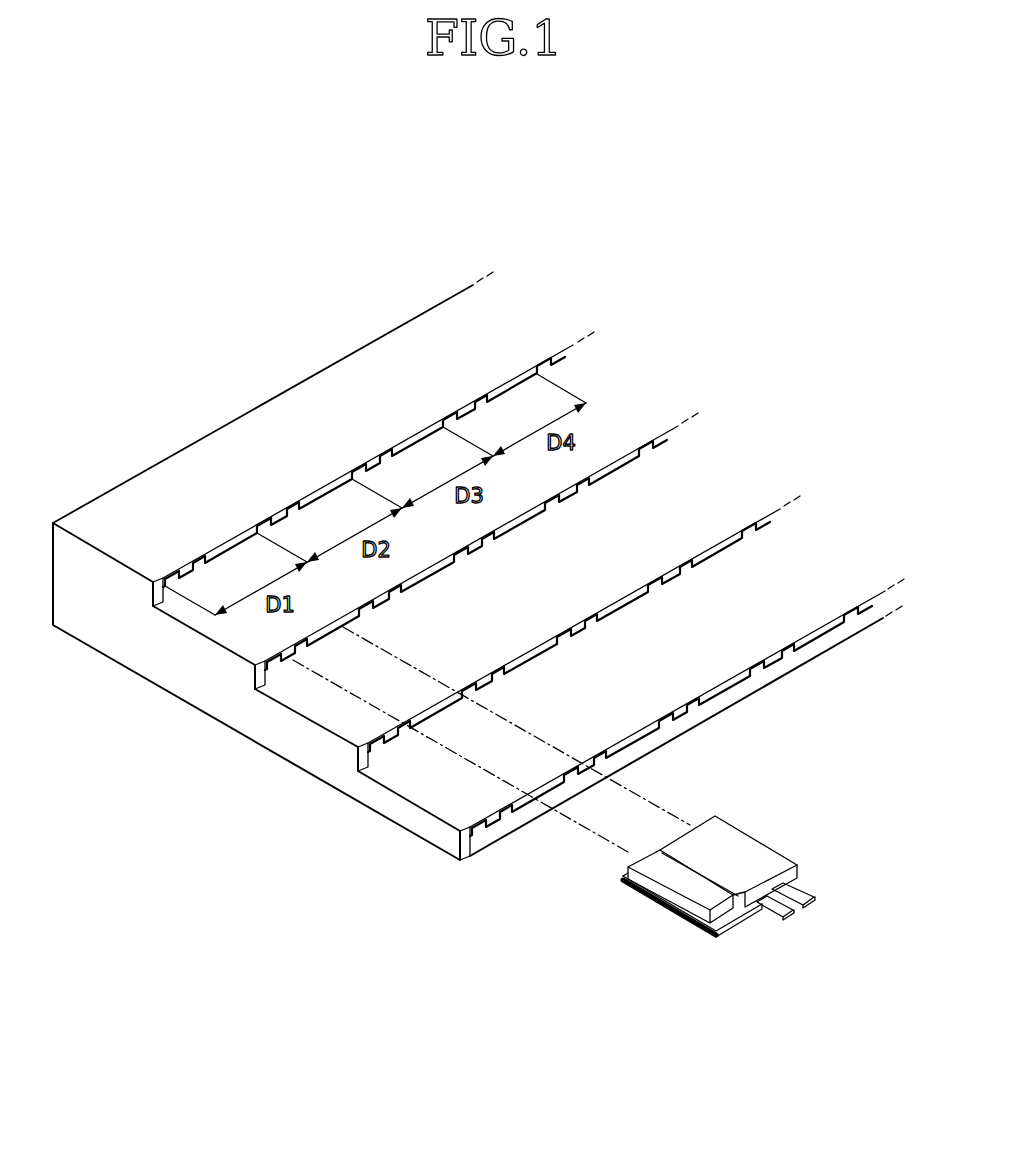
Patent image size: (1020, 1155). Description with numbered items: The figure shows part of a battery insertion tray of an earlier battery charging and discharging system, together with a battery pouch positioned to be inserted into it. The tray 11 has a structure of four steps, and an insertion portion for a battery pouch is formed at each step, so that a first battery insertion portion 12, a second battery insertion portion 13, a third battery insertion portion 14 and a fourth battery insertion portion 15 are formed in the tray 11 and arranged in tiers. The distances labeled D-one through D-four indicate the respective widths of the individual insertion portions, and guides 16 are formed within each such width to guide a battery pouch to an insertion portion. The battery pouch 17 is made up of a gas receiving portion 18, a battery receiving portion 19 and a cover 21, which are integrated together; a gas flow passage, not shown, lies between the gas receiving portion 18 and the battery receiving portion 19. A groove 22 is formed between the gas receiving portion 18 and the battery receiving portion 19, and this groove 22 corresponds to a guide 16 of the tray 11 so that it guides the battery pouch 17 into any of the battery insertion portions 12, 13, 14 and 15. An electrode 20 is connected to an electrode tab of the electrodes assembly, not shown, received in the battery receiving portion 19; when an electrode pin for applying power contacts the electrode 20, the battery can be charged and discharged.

The tray 11 is at (275, 362).
The first battery insertion portion 12 is at (831, 636).
The second battery insertion portion 13 is at (731, 554).
The third battery insertion portion 14 is at (629, 473).
The fourth battery insertion portion 15 is at (532, 390).
The guide 16 is at (576, 346).
The battery pouch 17 is at (693, 874).
The gas receiving portion 18 is at (693, 910).
The battery receiving portion 19 is at (750, 853).
The electrode 20 is at (798, 918).
The cover 21 is at (738, 927).
The groove 22 is at (709, 860).